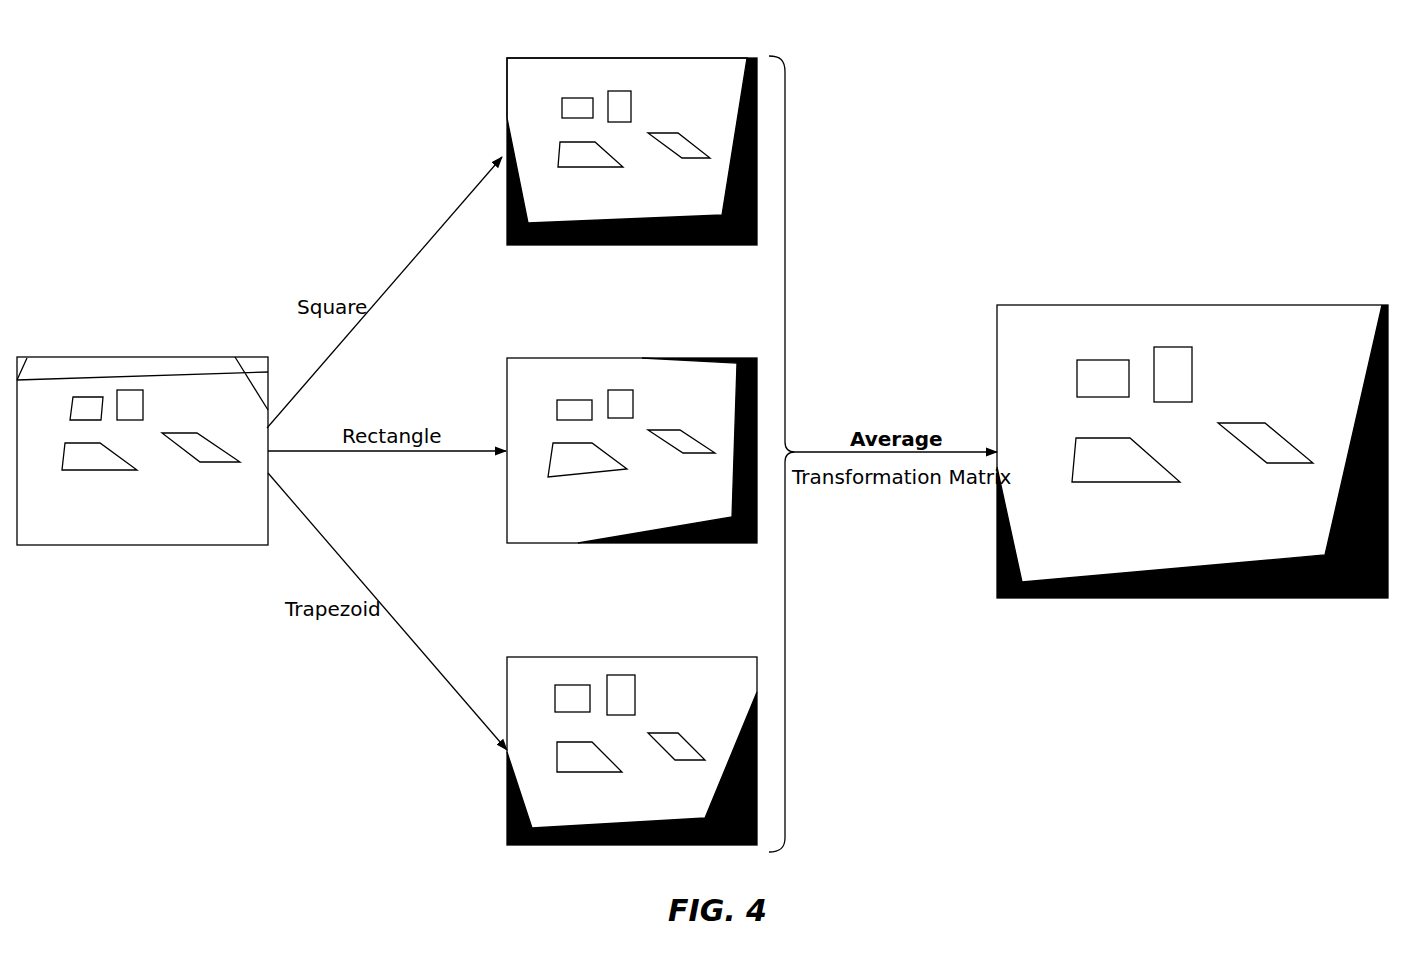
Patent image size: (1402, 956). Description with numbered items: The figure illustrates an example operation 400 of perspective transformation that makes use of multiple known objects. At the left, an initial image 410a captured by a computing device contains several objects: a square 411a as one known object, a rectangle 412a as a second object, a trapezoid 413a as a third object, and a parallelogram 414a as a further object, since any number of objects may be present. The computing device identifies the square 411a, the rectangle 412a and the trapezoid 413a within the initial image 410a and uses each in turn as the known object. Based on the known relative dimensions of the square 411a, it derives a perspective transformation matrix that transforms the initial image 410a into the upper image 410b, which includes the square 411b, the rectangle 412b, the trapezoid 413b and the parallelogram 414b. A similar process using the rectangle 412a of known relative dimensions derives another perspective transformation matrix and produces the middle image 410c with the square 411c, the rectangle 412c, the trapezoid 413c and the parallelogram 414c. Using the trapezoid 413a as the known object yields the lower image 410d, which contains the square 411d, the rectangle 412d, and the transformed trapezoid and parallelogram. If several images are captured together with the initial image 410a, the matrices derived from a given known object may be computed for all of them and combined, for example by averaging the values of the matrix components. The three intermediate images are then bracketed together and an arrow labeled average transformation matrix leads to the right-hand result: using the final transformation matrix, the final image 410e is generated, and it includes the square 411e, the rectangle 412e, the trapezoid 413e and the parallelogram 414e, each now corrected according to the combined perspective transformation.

The example operation 400 is at (1315, 75).
The initial image 410a is at (200, 357).
The square 411a is at (80, 397).
The rectangle 412a is at (128, 390).
The trapezoid 413a is at (102, 472).
The parallelogram 414a is at (220, 462).
The image 410b is at (690, 58).
The square 411b is at (563, 97).
The rectangle 412b is at (620, 90).
The trapezoid 413b is at (598, 168).
The parallelogram 414b is at (697, 158).
The image 410c is at (690, 358).
The square 411c is at (563, 398).
The rectangle 412c is at (620, 390).
The trapezoid 413c is at (593, 477).
The parallelogram 414c is at (702, 453).
The image 410d is at (690, 657).
The square 411d is at (557, 685).
The rectangle 412d is at (618, 675).
The trapezoid 413e is at (593, 772).
The parallelogram 414e is at (697, 760).
The final image 410e is at (1317, 305).
The square 411e is at (1105, 360).
The rectangle 412e is at (1175, 347).